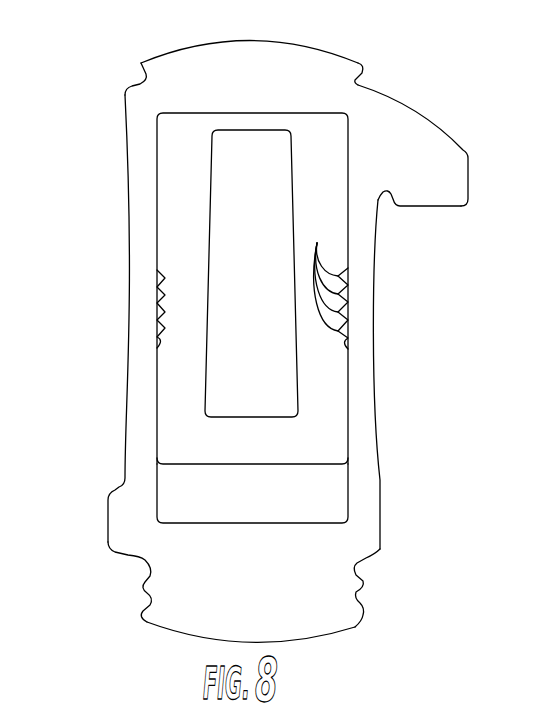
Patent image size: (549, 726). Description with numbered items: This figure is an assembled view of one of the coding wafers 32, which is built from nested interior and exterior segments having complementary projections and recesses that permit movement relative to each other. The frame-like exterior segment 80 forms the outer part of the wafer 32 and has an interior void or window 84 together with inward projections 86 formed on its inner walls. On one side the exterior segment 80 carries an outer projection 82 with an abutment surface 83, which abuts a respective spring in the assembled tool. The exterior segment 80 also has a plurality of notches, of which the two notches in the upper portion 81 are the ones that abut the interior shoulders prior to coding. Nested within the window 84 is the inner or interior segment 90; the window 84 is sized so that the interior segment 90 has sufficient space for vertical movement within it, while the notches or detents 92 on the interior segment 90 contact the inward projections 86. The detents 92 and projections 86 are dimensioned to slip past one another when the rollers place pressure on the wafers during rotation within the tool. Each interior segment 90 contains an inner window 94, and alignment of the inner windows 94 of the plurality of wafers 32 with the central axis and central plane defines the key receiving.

The wafer 32 is at (90, 246).
The exterior segment 80 is at (419, 74).
The upper portion 81 is at (263, 89).
The outer projection 82 is at (436, 153).
The abutment surface 83 is at (428, 207).
The window 84 is at (273, 500).
The inward projection 86 is at (157, 340).
The interior segment 90 is at (325, 436).
The detent 92 is at (322, 273).
The inner window 94 is at (265, 333).